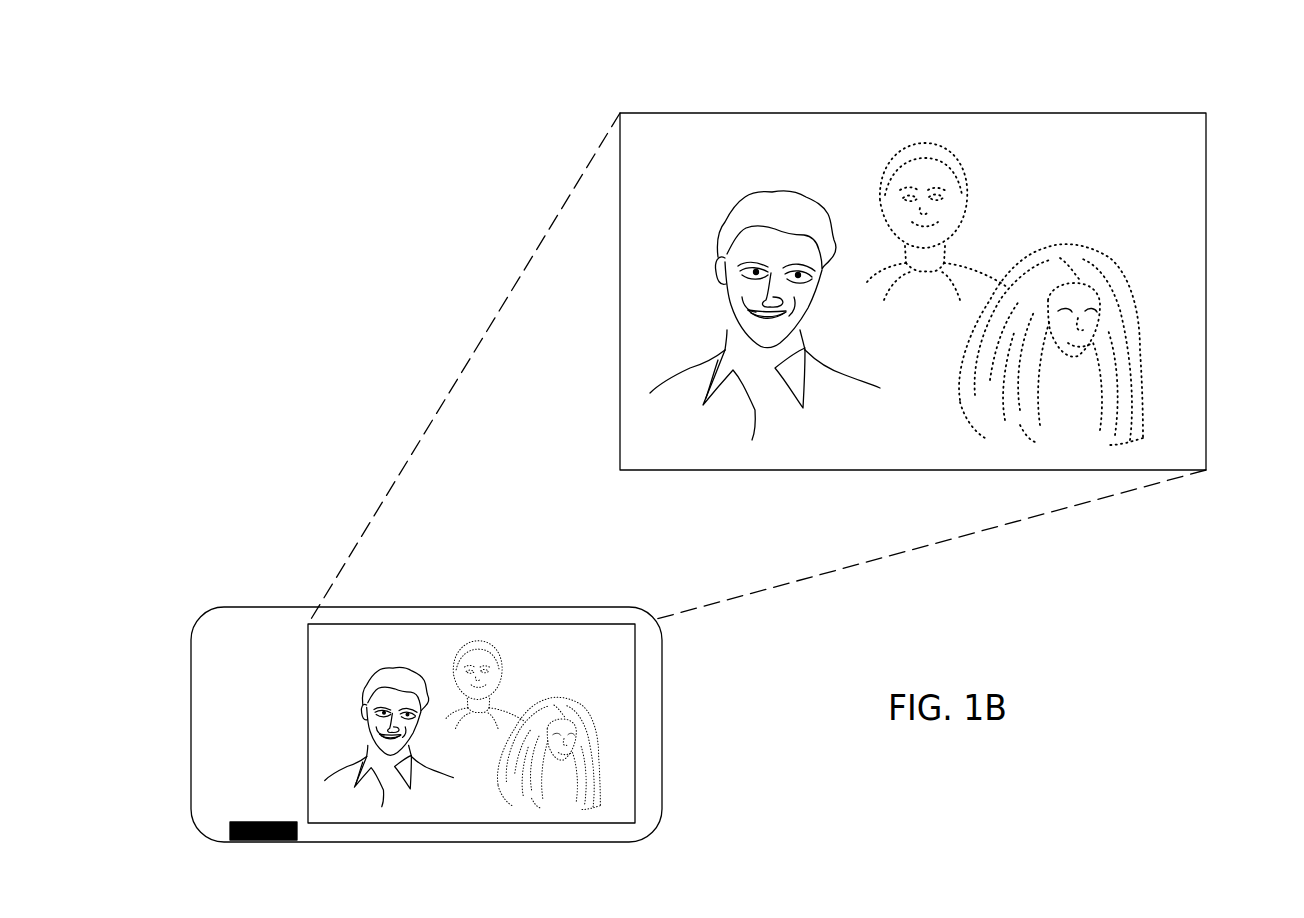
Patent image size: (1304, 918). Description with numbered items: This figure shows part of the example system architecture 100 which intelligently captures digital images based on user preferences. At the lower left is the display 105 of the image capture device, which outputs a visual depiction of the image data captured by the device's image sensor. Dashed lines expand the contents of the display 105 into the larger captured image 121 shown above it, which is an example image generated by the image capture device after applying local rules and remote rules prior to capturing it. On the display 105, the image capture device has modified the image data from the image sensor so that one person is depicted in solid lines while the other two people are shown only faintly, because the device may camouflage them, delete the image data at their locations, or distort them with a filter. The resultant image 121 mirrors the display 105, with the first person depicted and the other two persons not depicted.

The system architecture 100 is at (1271, 65).
The display 105 is at (308, 656).
The image 121 is at (826, 113).